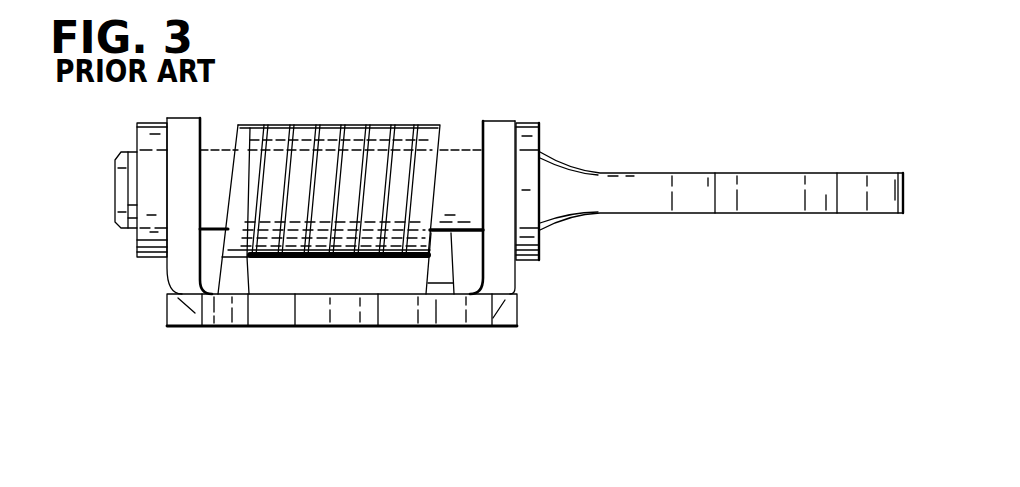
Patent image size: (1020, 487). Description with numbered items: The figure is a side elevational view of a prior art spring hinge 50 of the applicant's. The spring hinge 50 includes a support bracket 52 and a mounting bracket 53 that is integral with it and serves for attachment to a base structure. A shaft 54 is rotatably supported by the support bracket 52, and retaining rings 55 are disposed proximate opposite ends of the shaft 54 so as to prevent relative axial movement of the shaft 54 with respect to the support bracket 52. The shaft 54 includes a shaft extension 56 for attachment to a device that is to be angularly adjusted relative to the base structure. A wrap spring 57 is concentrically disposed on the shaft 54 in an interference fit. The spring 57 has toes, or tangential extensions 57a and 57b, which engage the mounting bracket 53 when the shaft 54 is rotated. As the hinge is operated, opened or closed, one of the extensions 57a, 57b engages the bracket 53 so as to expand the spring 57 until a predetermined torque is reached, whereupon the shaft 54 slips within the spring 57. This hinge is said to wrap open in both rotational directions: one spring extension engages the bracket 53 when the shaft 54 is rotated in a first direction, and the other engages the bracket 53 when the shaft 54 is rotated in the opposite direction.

The spring hinge 50 is at (604, 94).
The support bracket 52 is at (507, 123).
The mounting bracket 53 is at (518, 311).
The shaft 54 is at (213, 152).
The retaining rings 55 is at (148, 142).
The shaft extension 56 is at (767, 173).
The wrap spring 57 is at (293, 125).
The tangential extension 57a is at (250, 270).
The tangential extension 57b is at (433, 270).